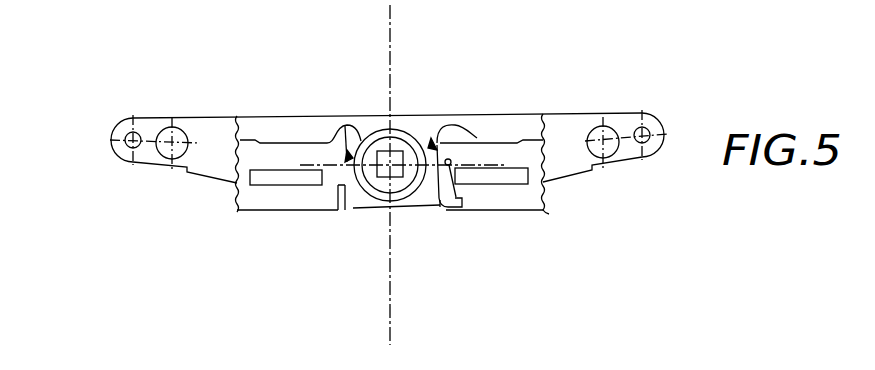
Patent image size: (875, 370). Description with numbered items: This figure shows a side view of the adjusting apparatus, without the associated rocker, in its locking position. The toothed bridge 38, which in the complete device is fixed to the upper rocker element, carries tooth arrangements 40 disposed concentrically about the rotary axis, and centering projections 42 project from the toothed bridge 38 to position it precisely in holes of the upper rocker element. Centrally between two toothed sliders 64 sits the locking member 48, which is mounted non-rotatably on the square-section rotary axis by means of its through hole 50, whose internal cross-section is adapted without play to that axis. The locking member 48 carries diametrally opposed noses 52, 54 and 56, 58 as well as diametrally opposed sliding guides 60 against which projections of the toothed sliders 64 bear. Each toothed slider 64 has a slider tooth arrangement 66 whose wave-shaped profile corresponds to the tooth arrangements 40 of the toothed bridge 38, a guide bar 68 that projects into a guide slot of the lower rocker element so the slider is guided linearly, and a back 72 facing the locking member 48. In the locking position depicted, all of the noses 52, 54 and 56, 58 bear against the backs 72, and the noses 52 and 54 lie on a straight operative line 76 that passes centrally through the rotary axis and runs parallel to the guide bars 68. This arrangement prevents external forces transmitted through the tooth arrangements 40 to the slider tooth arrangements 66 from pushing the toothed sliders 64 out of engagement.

The toothed bridge 38 is at (153, 125).
The tooth arrangements 40 is at (243, 116).
The centering projections 42 is at (165, 163).
The locking member 48 is at (400, 129).
The through hole 50 is at (381, 152).
The nose 52 is at (431, 137).
The nose 54 is at (363, 212).
The nose 56 is at (437, 148).
The nose 58 is at (345, 186).
The sliding guides 60 is at (346, 140).
The toothed sliders 64 is at (282, 210).
The slider tooth arrangement 66 is at (237, 208).
The guide bar 68 is at (273, 176).
The back 72 is at (440, 145).
The operative line 76 is at (457, 205).